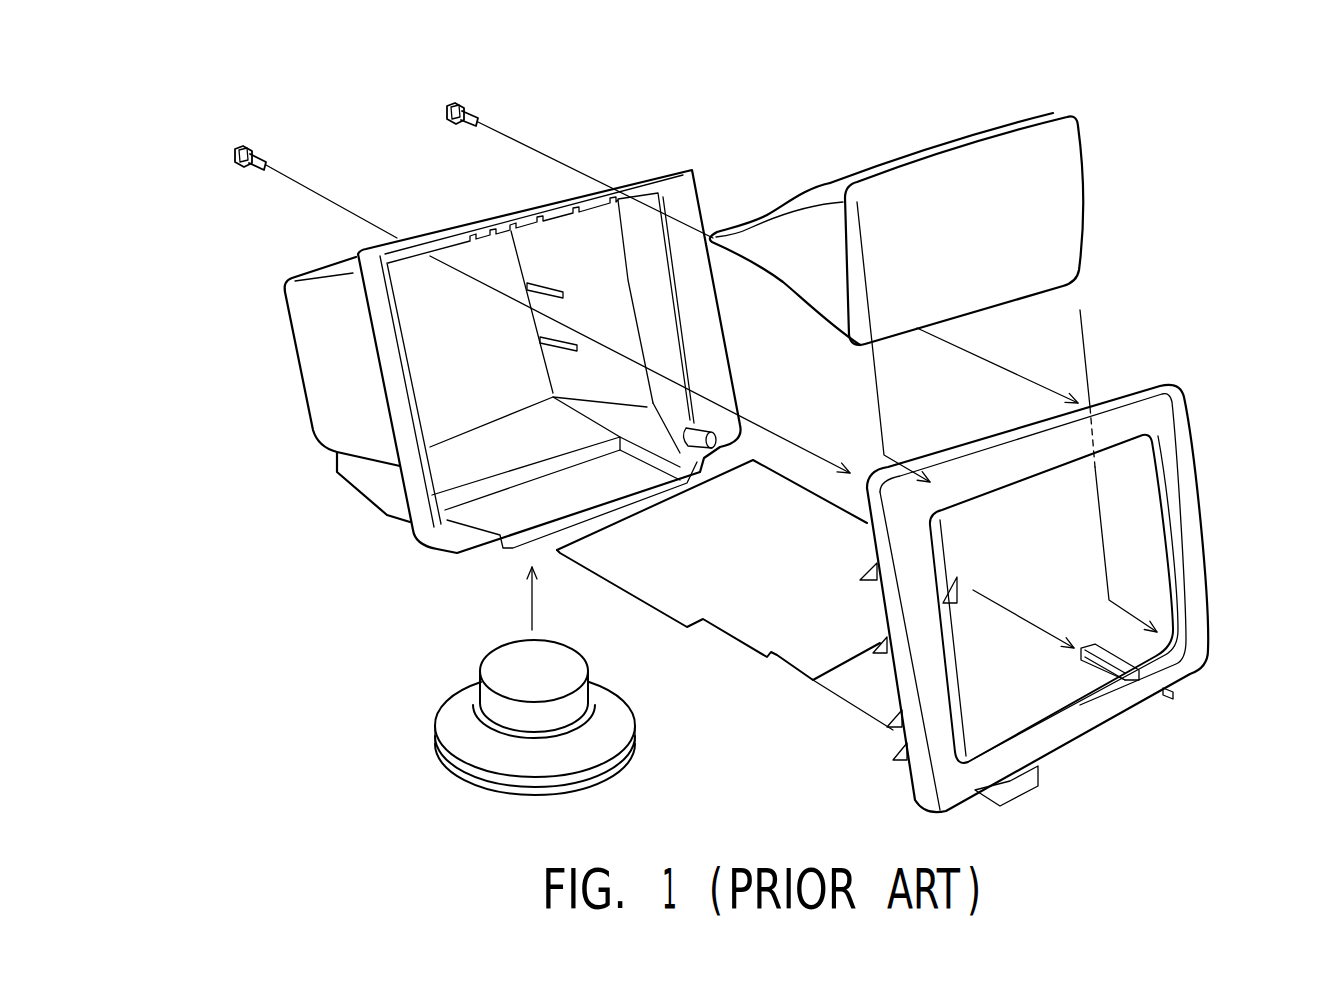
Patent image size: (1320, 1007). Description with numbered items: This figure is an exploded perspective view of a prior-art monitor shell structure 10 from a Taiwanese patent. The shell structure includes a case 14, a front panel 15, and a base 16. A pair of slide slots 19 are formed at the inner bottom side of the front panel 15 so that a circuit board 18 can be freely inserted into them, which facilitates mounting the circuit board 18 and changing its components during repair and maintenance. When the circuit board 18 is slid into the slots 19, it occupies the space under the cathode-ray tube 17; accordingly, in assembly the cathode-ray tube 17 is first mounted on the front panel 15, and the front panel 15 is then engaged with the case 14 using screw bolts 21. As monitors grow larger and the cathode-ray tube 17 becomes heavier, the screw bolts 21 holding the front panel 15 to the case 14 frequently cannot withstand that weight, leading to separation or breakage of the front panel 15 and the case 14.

The monitor shell structure 10 is at (1315, 101).
The case 14 is at (429, 236).
The front panel 15 is at (1160, 407).
The base 16 is at (450, 718).
The cathode-ray tube 17 is at (1061, 200).
The circuit board 18 is at (653, 573).
The slide slots 19 is at (1081, 660).
The screw bolts 21 is at (449, 102).